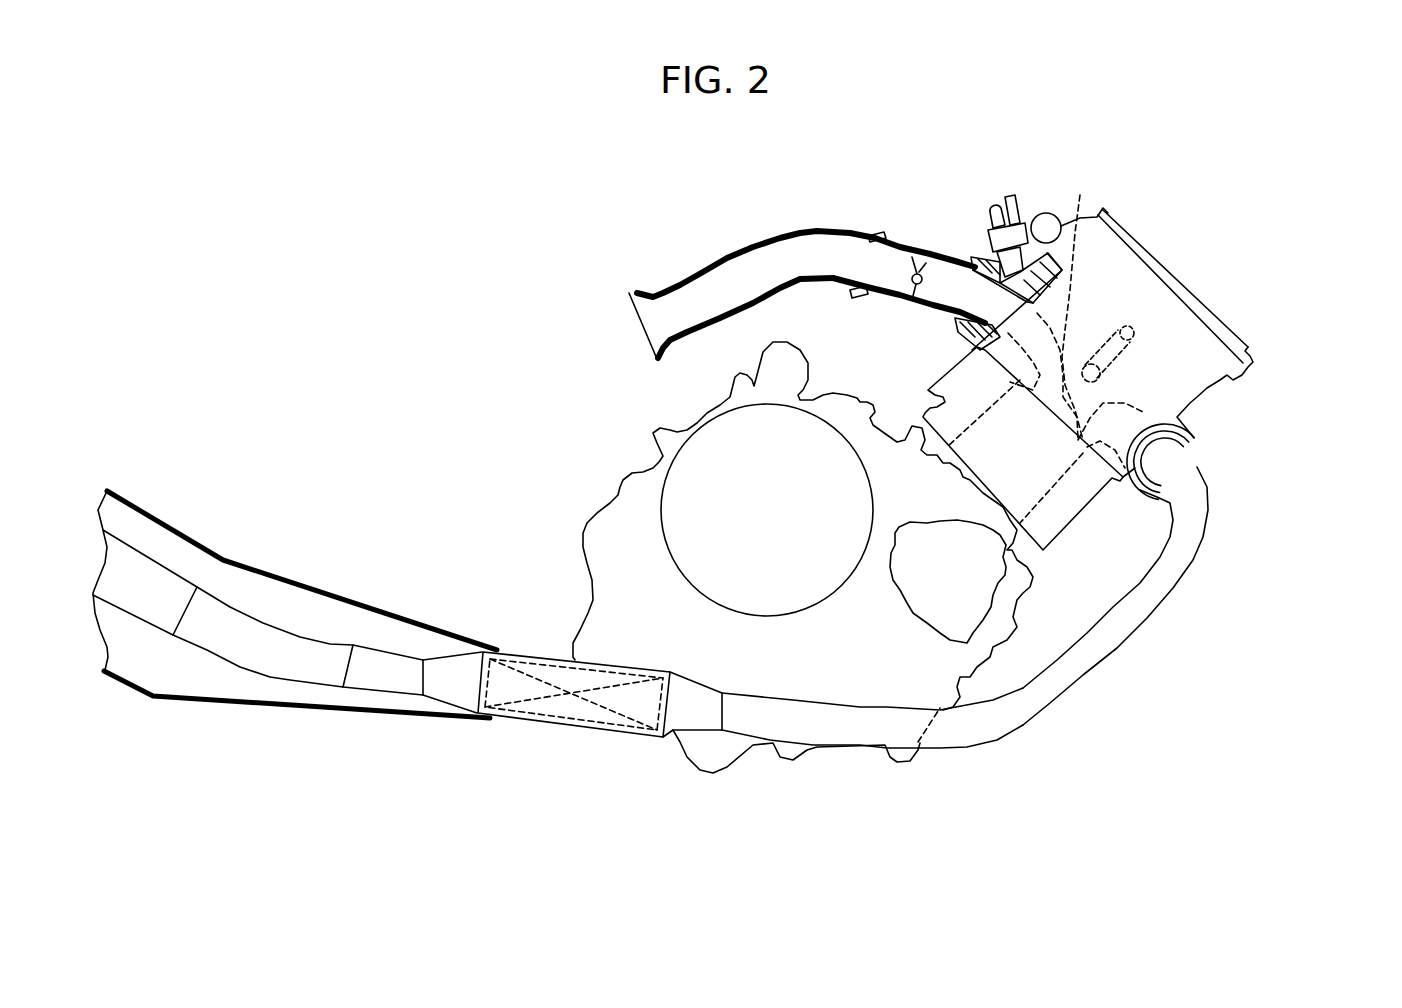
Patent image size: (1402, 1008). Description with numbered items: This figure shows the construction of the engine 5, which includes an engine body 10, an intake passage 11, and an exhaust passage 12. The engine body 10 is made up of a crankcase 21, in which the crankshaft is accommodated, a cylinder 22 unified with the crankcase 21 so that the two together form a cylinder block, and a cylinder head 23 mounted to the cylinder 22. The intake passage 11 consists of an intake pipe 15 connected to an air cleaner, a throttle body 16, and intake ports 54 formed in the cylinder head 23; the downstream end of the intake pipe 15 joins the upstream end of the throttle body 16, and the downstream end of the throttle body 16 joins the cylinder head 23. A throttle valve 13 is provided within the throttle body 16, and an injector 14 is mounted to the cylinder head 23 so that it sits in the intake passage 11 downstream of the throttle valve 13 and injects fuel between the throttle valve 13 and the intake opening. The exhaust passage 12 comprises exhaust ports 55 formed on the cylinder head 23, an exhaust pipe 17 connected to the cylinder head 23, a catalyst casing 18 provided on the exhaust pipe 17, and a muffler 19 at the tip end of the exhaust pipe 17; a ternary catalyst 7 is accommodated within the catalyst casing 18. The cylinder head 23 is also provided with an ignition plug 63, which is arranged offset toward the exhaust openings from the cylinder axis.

The engine 5 is at (1215, 209).
The ternary catalyst 7 is at (523, 727).
The engine body 10 is at (1243, 334).
The intake passage 11 is at (846, 226).
The exhaust passage 12 is at (1013, 740).
The throttle valve 13 is at (912, 256).
The injector 14 is at (1052, 207).
The intake pipe 15 is at (730, 255).
The throttle body 16 is at (955, 258).
The exhaust pipe 17 is at (1178, 590).
The catalyst casing 18 is at (570, 727).
The muffler 19 is at (207, 545).
The crankcase 21 is at (860, 633).
The cylinder 22 is at (1073, 520).
The cylinder head 23 is at (1126, 213).
The intake ports 54 is at (1080, 195).
The exhaust ports 55 is at (1189, 432).
The ignition plug 63 is at (1186, 305).